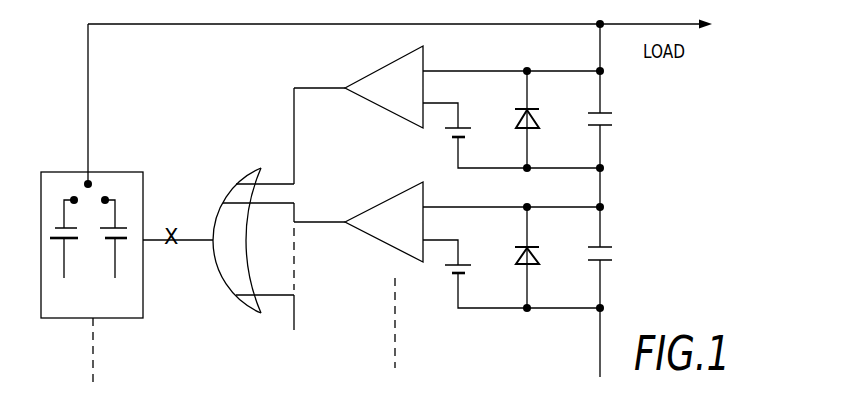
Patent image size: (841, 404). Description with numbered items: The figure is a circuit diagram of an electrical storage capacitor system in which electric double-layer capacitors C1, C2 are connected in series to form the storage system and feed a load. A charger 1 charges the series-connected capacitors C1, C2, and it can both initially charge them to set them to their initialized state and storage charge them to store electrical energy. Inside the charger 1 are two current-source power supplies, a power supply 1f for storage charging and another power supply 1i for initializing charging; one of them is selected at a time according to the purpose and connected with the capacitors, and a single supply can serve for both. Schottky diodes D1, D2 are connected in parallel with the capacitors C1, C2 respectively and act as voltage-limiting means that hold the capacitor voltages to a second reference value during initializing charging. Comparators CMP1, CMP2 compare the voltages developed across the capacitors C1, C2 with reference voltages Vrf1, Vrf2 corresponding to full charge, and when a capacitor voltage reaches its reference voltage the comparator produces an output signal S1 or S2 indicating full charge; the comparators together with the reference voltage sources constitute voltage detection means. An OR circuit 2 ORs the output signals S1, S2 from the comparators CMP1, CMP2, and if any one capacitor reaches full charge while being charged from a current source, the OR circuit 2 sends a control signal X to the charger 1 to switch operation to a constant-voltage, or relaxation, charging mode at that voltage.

The charger 1 is at (114, 172).
The power supply for initializing charging 1i is at (55, 235).
The power supply for storage charging 1f is at (125, 232).
The OR circuit 2 is at (216, 224).
The output signal S1 is at (319, 120).
The output signal S2 is at (319, 206).
The comparator CMP1 is at (472, 87).
The comparator CMP2 is at (472, 275).
The reference voltage Vrf1 is at (494, 134).
The reference voltage Vrf2 is at (490, 272).
The Schottky diode D1 is at (541, 118).
The Schottky diode D2 is at (541, 255).
The electric double-layer capacitor C1 is at (613, 118).
The electric double-layer capacitor C2 is at (613, 250).